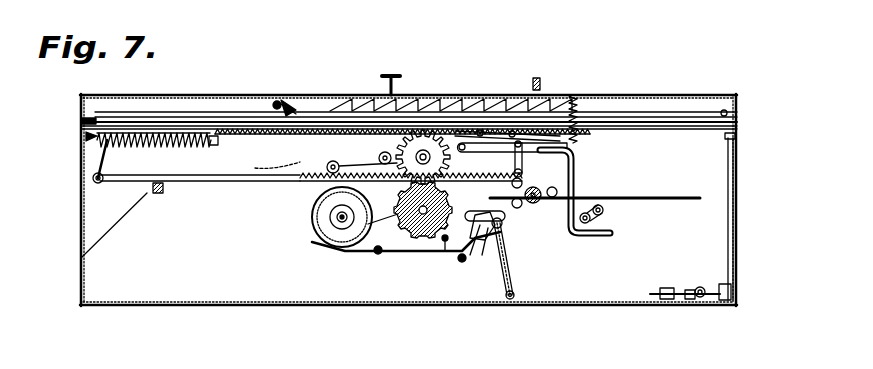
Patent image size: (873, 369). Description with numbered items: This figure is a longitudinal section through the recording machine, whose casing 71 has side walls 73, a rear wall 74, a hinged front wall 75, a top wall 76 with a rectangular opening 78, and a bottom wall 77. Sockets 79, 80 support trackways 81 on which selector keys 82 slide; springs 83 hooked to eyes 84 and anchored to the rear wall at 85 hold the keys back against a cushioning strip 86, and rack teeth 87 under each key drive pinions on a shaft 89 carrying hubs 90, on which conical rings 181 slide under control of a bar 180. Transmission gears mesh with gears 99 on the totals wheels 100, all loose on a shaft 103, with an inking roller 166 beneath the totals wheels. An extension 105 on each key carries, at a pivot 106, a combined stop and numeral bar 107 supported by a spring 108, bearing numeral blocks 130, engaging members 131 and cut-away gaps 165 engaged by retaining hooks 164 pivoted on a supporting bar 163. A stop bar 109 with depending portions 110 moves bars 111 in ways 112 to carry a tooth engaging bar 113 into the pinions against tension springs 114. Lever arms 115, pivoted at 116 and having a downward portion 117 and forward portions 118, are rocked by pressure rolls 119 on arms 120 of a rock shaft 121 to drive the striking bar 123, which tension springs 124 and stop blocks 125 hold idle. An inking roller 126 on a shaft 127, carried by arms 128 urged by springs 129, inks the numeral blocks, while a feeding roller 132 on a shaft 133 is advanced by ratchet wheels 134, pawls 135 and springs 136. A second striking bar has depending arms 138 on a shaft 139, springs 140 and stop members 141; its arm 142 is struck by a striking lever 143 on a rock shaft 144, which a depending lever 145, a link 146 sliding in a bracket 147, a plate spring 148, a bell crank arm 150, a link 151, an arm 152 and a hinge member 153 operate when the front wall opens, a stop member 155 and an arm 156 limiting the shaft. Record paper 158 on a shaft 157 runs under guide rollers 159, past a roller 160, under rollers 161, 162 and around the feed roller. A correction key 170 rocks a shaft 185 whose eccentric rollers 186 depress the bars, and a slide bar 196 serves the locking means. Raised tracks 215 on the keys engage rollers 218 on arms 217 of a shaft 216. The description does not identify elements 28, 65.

The base 28 is at (580, 349).
The shaft 65 is at (620, 361).
The casing 71 is at (180, 306).
The side walls 73 is at (201, 296).
The rear wall 74 is at (82, 226).
The hinged front wall 75 is at (738, 190).
The top wall 76 is at (186, 95).
The bottom wall 77 is at (106, 306).
The rectangular opening 78 is at (530, 142).
The sockets 79 is at (737, 111).
The sockets 80 is at (84, 100).
The trackways 81 is at (703, 120).
The selector keys 82 is at (102, 150).
The springs 83 is at (137, 134).
The eyes 84 is at (210, 143).
The spring attachment point 85 is at (88, 139).
The cushioning strip 86 is at (82, 123).
The rack teeth 87 is at (232, 206).
The shaft 89 is at (391, 74).
The hub 90 is at (422, 150).
The gear 99 is at (318, 251).
The totals wheel 100 is at (344, 262).
The shaft 103 is at (334, 250).
The extension 105 is at (93, 179).
The pivotal connection 106 is at (84, 200).
The combined stop and numeral bar 107 is at (83, 262).
The spring 108 is at (578, 152).
The stop bar 109 is at (576, 94).
The depending portions 110 is at (574, 100).
The bars 111 is at (537, 78).
The ways 112 is at (512, 130).
The tooth engaging bar 113 is at (462, 142).
The tension springs 114 is at (578, 108).
The lever arms 115 is at (580, 186).
The pivot 116 is at (480, 129).
The downwardly extending portion 117 is at (580, 177).
The forwardly extending portions 118 is at (612, 226).
The pressure rolls 119 is at (602, 218).
The arms 120 is at (606, 212).
The rock shaft 121 is at (670, 197).
The striking bar 123 is at (582, 130).
The tension springs 124 is at (587, 93).
The stop blocks 125 is at (585, 118).
The inking roller 126 is at (540, 236).
The shaft 127 is at (509, 252).
The arms 128 is at (485, 205).
The tension springs 129 is at (568, 196).
The numeral blocks 130 is at (512, 176).
The engaging members 131 is at (370, 161).
The feeding roller 132 is at (594, 234).
The shaft 133 is at (594, 244).
The ratchet wheels 134 is at (540, 204).
The pawls 135 is at (560, 186).
The springs 136 is at (582, 100).
The depending arms 138 is at (372, 262).
The shaft 139 is at (420, 276).
The tension springs 140 is at (455, 262).
The stop members 141 is at (468, 265).
The forwardly extending arm 142 is at (486, 262).
The striking lever 143 is at (495, 270).
The rock shaft 144 is at (500, 275).
The depending lever 145 is at (553, 262).
The link 146 is at (633, 305).
The bracket member 147 is at (672, 301).
The plate spring 148 is at (706, 301).
The arm of bell crank lever 150 is at (722, 293).
The link 151 is at (737, 268).
The arm 152 is at (738, 292).
The hinge member 153 is at (738, 172).
The stop member 155 is at (514, 270).
The arm 156 is at (506, 272).
The shaft 157 is at (303, 226).
The roll of record paper 158 is at (306, 243).
The guide rollers 159 is at (436, 255).
The roller 160 is at (410, 266).
The roller 161 is at (562, 240).
The roller 162 is at (604, 211).
The supporting bar 163 is at (300, 206).
The retaining hooks 164 is at (300, 186).
The cut-away inclined gaps 165 is at (292, 165).
The inking roller 166 is at (440, 232).
The correction key 170 is at (356, 88).
The bar 180 is at (398, 160).
The conical rings 181 is at (411, 205).
The rock shaft 185 is at (262, 166).
The eccentric rollers 186 is at (333, 161).
The slide bar 196 is at (158, 196).
The raised track 215 is at (126, 112).
The shaft 216 is at (252, 95).
The arms 217 is at (277, 135).
The rollers 218 is at (278, 101).